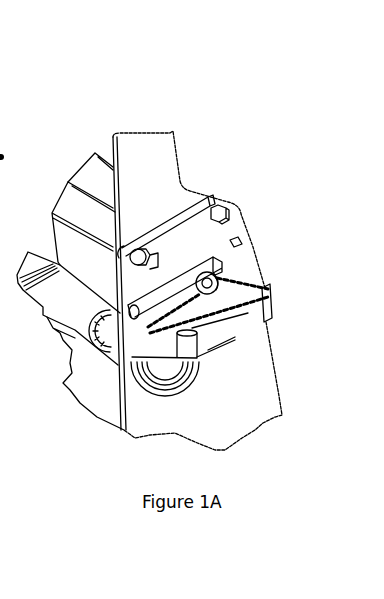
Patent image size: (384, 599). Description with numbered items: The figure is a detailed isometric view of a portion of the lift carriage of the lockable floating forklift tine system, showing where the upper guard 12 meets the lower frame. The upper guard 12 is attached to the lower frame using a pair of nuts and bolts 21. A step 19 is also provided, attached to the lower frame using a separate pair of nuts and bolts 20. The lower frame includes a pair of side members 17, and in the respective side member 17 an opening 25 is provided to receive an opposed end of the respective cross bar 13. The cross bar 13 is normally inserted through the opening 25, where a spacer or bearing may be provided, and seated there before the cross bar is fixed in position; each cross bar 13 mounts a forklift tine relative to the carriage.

The upper guard 12 is at (180, 131).
The cross bar 13 is at (72, 315).
The side member 17 is at (232, 408).
The step 19 is at (277, 291).
The nuts and bolts 20 is at (215, 276).
The nuts and bolts 21 is at (230, 198).
The opening 25 is at (146, 398).